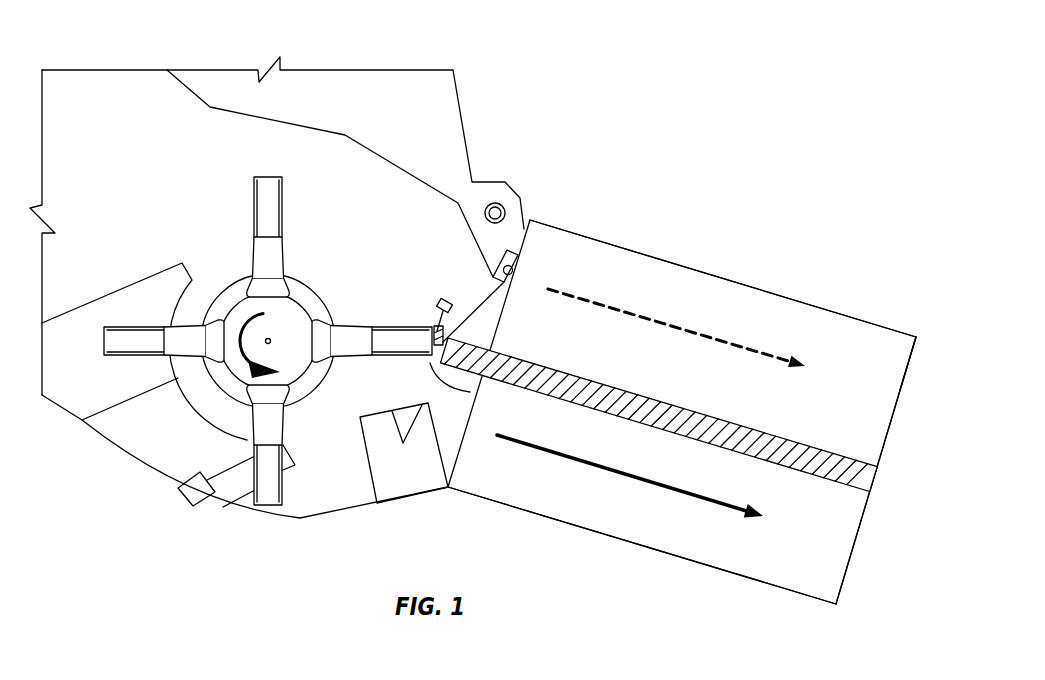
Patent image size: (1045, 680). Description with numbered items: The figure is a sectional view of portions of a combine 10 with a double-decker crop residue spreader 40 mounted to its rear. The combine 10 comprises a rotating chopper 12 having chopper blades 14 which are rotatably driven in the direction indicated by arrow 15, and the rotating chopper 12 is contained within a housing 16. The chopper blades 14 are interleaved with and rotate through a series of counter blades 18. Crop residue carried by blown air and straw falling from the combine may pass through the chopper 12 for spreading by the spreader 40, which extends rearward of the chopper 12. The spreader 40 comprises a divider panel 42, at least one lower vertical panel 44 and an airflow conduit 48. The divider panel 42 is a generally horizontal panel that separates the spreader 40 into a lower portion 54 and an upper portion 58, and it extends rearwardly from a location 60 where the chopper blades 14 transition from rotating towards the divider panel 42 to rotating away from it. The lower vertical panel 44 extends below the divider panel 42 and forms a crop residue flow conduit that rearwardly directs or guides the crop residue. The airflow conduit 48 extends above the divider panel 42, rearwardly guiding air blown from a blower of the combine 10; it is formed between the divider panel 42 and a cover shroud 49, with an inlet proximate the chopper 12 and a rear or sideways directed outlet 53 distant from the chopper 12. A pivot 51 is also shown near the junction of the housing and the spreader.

The combine 10 is at (466, 62).
The rotating chopper 12 is at (138, 322).
The chopper blades 14 is at (283, 190).
The arrow 15 is at (253, 320).
The housing 16 is at (127, 453).
The counter blades 18 is at (237, 490).
The double-decker crop residue spreader 40 is at (728, 277).
The divider panel 42 is at (828, 453).
The lower vertical panel 44 is at (745, 577).
The airflow conduit 48 is at (857, 325).
The cover shroud 49 is at (682, 262).
The pivot 51 is at (514, 270).
The outlet 53 is at (912, 363).
The lower portion 54 is at (653, 562).
The upper portion 58 is at (799, 298).
The location 60 is at (437, 333).